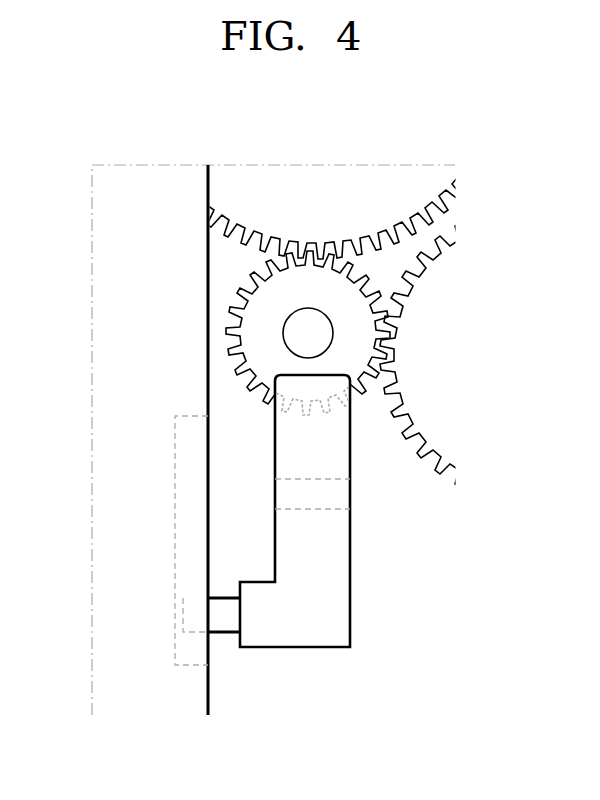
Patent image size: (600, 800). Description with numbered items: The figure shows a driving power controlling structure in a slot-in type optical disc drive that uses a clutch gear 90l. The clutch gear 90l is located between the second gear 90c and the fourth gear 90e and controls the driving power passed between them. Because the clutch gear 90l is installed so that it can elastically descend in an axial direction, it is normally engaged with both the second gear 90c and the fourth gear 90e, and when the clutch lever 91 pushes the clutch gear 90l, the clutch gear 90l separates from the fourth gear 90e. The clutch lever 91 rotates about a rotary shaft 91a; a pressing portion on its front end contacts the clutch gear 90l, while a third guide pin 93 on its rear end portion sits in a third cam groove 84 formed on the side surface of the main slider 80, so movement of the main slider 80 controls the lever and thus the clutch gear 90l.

The main slider 80 is at (102, 573).
The third cam groove 84 is at (183, 513).
The second gear 90c is at (358, 180).
The fourth gear 90e is at (445, 347).
The clutch gear 90l is at (232, 317).
The clutch lever 91 is at (302, 648).
The rotary shaft 91a is at (332, 512).
The third guide pin 93 is at (224, 601).